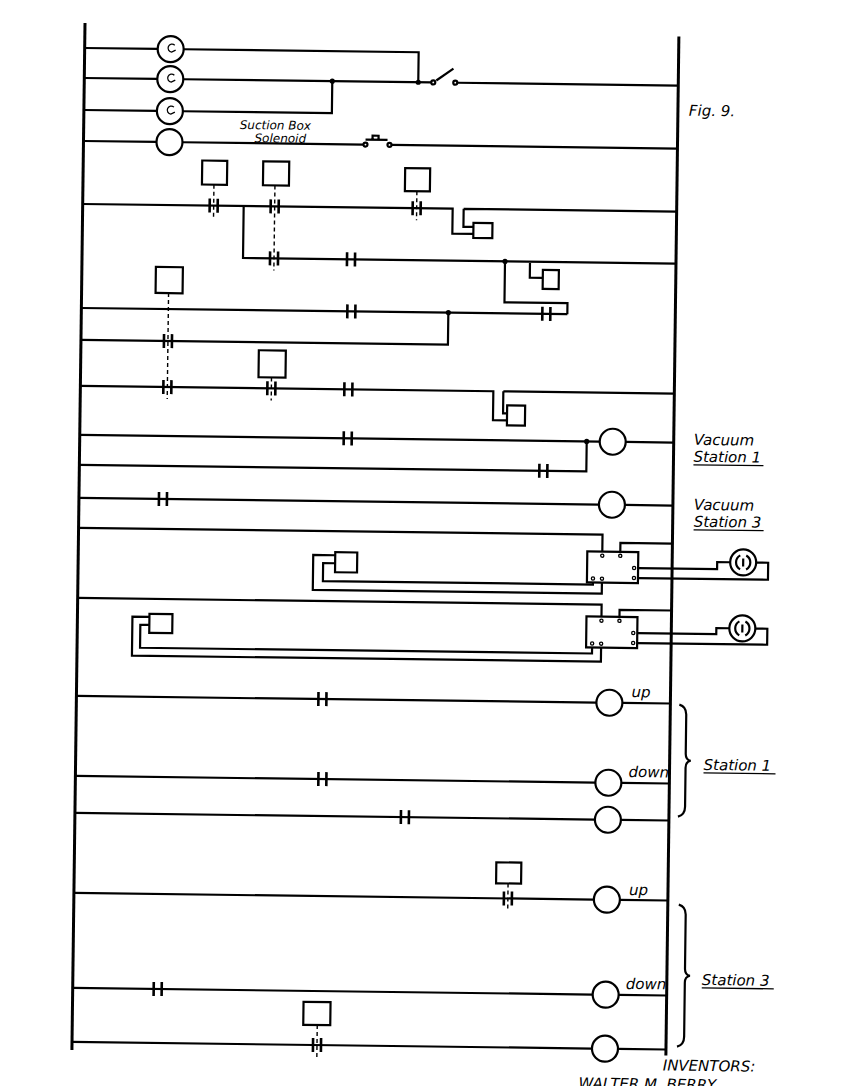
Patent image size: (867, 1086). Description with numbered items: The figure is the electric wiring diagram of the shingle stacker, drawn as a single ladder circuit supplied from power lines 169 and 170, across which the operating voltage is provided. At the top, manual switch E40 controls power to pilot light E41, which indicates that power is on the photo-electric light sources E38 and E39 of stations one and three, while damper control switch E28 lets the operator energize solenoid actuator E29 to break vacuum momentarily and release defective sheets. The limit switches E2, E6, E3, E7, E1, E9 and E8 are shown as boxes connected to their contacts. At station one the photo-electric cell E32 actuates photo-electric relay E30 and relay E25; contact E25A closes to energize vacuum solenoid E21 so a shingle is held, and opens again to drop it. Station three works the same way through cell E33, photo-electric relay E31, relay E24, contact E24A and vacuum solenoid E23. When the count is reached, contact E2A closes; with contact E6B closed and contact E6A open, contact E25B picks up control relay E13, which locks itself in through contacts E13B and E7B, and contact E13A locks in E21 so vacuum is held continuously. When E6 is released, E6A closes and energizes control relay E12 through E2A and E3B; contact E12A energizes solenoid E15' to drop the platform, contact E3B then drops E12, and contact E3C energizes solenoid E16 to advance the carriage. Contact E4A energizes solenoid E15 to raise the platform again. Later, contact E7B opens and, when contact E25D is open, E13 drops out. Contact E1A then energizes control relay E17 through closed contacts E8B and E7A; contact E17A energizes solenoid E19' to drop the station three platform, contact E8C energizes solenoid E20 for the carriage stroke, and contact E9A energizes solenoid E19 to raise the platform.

The power line 169 is at (85, 24).
The power line 170 is at (681, 39).
The pilot light E41 is at (184, 44).
The photo-electric light source E38 is at (184, 74).
The photo-electric light source E39 is at (184, 106).
The solenoid actuator E29 is at (184, 137).
The manual switch E40 is at (455, 67).
The damper control switch E28 is at (392, 140).
The limit switch E2 is at (215, 189).
The contact of limit switch E2 E2A is at (208, 198).
The limit switch E6 is at (275, 215).
The contact of limit switch E6 E6A is at (285, 200).
The contact of limit switch E6 E6B is at (286, 252).
The limit switch E3 is at (418, 194).
The contact of limit switch E3 E3B is at (412, 202).
The contact of limit switch E3 E3C is at (423, 809).
The control relay E12 is at (495, 231).
The contact of relay E25 E25B is at (362, 253).
The control relay E13 is at (562, 275).
The contact of relay E13 E13A is at (547, 459).
The contact of relay E13 E13B is at (548, 318).
The limit switch E7 is at (168, 333).
The contact of limit switch E7 E7A is at (180, 382).
The contact of limit switch E7 E7B is at (180, 336).
The contact of relay E25 E25D is at (363, 305).
The limit switch E1 is at (272, 375).
The contact of limit switch E1 E1A is at (280, 396).
The contact of limit switch E8 E8B is at (360, 380).
The control relay E17 is at (530, 409).
The contact of relay E17 E17A is at (178, 984).
The contact of relay E25 E25A is at (361, 432).
The vacuum solenoid E21 is at (628, 426).
The vacuum solenoid E23 is at (629, 490).
The contact of relay E24 E24A is at (177, 494).
The relay E25 is at (364, 559).
The photo-electric relay E30 is at (593, 555).
The photo-electric cell E32 is at (760, 545).
The relay E24 is at (180, 623).
The photo-electric relay E31 is at (593, 622).
The photo-electric cell E33 is at (760, 611).
The contact of limit switch E4 E4A is at (339, 692).
The operating solenoid E15 is at (624, 710).
The contact of relay E12 E12A is at (339, 770).
The operating solenoid E15' is at (627, 789).
The operating solenoid E16 is at (628, 824).
The limit switch E9 is at (509, 886).
The contact of limit switch E9 E9A is at (525, 900).
The operating solenoid E19 is at (623, 906).
The operating solenoid E19' is at (624, 1002).
The limit switch E8 is at (317, 1029).
The contact of limit switch E8 E8C is at (338, 1040).
The operating solenoid E20 is at (628, 1053).